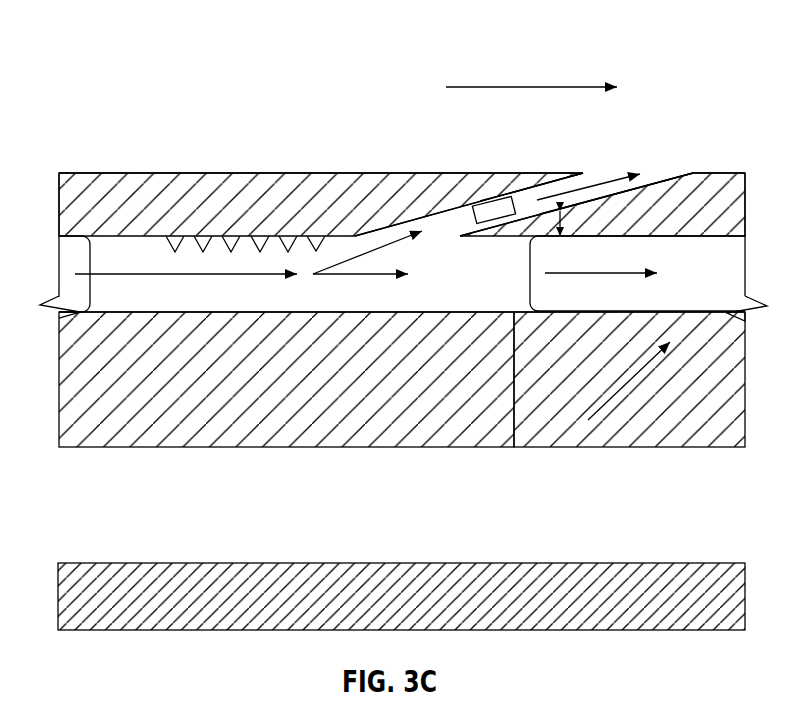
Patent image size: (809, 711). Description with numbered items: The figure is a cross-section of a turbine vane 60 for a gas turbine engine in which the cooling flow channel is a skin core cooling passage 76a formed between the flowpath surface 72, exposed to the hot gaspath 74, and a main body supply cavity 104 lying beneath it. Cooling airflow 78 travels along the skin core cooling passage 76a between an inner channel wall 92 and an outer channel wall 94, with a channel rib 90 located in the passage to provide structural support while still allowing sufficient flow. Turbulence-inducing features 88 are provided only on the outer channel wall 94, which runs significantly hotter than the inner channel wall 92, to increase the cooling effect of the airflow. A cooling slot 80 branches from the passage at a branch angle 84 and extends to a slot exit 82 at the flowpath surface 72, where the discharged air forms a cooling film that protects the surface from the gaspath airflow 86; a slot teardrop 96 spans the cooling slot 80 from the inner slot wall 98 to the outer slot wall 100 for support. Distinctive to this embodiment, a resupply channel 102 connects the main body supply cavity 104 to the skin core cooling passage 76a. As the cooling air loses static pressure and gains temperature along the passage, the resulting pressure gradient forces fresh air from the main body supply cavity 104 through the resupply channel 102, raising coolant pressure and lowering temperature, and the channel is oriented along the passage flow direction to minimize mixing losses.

The turbine vane 60 is at (103, 40).
The flowpath surface 72 is at (118, 172).
The hot gaspath 74 is at (292, 147).
The skin core cooling passage 76a is at (724, 288).
The cooling airflow 78 is at (162, 272).
The cooling slot 80 is at (437, 212).
The slot exit 82 is at (675, 172).
The branch angle 84 is at (565, 212).
The gaspath airflow 86 is at (460, 86).
The turbulence-inducing features 88 is at (342, 173).
The channel rib 90 is at (172, 292).
The inner channel wall 92 is at (108, 315).
The outer channel wall 94 is at (97, 232).
The slot teardrop 96 is at (545, 182).
The inner slot wall 98 is at (570, 207).
The outer slot wall 100 is at (524, 190).
The resupply channel 102 is at (568, 430).
The main body supply cavity 104 is at (422, 519).